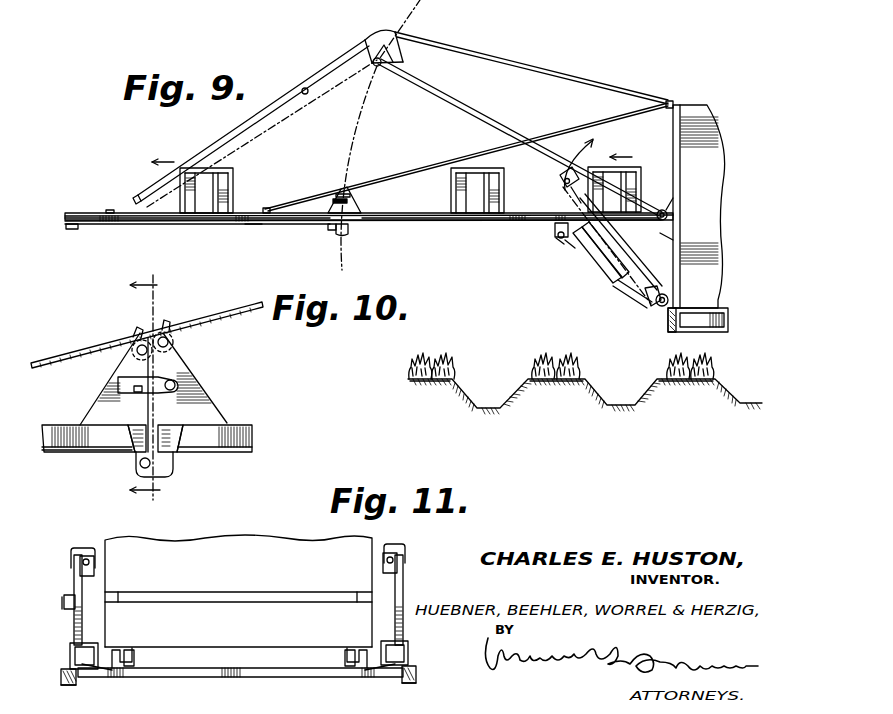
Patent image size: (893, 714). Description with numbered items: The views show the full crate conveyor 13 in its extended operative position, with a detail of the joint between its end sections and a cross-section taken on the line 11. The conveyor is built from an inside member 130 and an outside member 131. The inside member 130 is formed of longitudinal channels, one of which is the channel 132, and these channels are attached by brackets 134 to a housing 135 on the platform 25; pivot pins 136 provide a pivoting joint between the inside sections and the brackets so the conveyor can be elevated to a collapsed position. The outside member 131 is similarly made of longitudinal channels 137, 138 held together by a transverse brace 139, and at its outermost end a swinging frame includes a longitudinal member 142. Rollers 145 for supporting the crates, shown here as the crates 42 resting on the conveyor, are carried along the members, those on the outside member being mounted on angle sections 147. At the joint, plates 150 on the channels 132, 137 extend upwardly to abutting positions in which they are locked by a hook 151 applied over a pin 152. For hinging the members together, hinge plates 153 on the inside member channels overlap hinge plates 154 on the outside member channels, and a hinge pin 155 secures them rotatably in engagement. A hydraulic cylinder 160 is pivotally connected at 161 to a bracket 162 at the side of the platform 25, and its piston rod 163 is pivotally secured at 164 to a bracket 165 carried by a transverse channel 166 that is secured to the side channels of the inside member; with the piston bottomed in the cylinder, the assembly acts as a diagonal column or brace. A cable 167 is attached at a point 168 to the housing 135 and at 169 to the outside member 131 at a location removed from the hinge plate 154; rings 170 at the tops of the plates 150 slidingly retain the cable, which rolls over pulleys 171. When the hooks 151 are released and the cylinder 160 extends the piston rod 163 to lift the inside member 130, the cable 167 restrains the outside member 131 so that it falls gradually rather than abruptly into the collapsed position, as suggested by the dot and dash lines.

In FIG. 10, the section line 11— 11 is at (157, 388).
In FIG. 9, the full crate conveyor 13 is at (100, 178).
In FIG. 9, the platform 25 is at (732, 324).
In FIG. 9, the seed box 42 is at (233, 175).
In FIG. 11, the seed box 42 is at (260, 534).
In FIG. 9, the inside member 130 is at (509, 226).
In FIG. 10, the inside member 130 is at (258, 444).
In FIG. 9, the outside member 131 is at (298, 229).
In FIG. 10, the outside member 131 is at (42, 448).
In FIG. 9, the longitudinal channel 132 is at (456, 226).
In FIG. 10, the longitudinal channel 132 is at (240, 452).
In FIG. 9, the bracket 134 is at (668, 232).
In FIG. 9, the housing 135 is at (710, 104).
In FIG. 9, the pivot pin 136 is at (668, 212).
In FIG. 9, the longitudinal channel 137 is at (263, 226).
In FIG. 10, the longitudinal channel 137 is at (78, 452).
In FIG. 11, the longitudinal channel 137 is at (114, 668).
In FIG. 11, the longitudinal channel 138 is at (384, 670).
In FIG. 11, the transverse brace 139 is at (209, 679).
In FIG. 9, the longitudinal member 142 is at (88, 231).
In FIG. 11, the roller 145 is at (134, 659).
In FIG. 11, the angle section 147 is at (116, 653).
In FIG. 9, the plate 150 is at (388, 45).
In FIG. 10, the plate 150 is at (88, 394).
In FIG. 11, the plate 150 is at (73, 577).
In FIG. 9, the hook 151 is at (330, 208).
In FIG. 10, the hook 151 is at (172, 376).
In FIG. 11, the hook 151 is at (63, 596).
In FIG. 10, the pin 152 is at (134, 394).
In FIG. 11, the pin 152 is at (64, 608).
In FIG. 9, the hinge plate 153 is at (347, 226).
In FIG. 10, the hinge plate 153 is at (174, 462).
In FIG. 11, the hinge plate 153 is at (62, 690).
In FIG. 9, the hinge plate 154 is at (331, 230).
In FIG. 10, the hinge plate 154 is at (138, 452).
In FIG. 11, the hinge plate 154 is at (68, 652).
In FIG. 10, the hinge pin 155 is at (140, 466).
In FIG. 11, the hinge pin 155 is at (58, 680).
In FIG. 9, the hydraulic cylinder 160 is at (613, 266).
In FIG. 9, the pivotal connection 161 is at (653, 308).
In FIG. 9, the bracket 162 is at (670, 319).
In FIG. 9, the piston rod 163 is at (574, 246).
In FIG. 9, the pivotal connection 164 is at (553, 242).
In FIG. 9, the bracket 165 is at (554, 234).
In FIG. 9, the transverse channel 166 is at (562, 224).
In FIG. 9, the cable 167 is at (520, 63).
In FIG. 10, the cable 167 is at (240, 311).
In FIG. 9, the attachment point 168 is at (672, 100).
In FIG. 9, the attachment point 169 is at (268, 206).
In FIG. 10, the ring 170 is at (136, 334).
In FIG. 11, the ring 170 is at (84, 548).
In FIG. 10, the pulley 171 is at (124, 354).
In FIG. 11, the pulley 171 is at (94, 558).